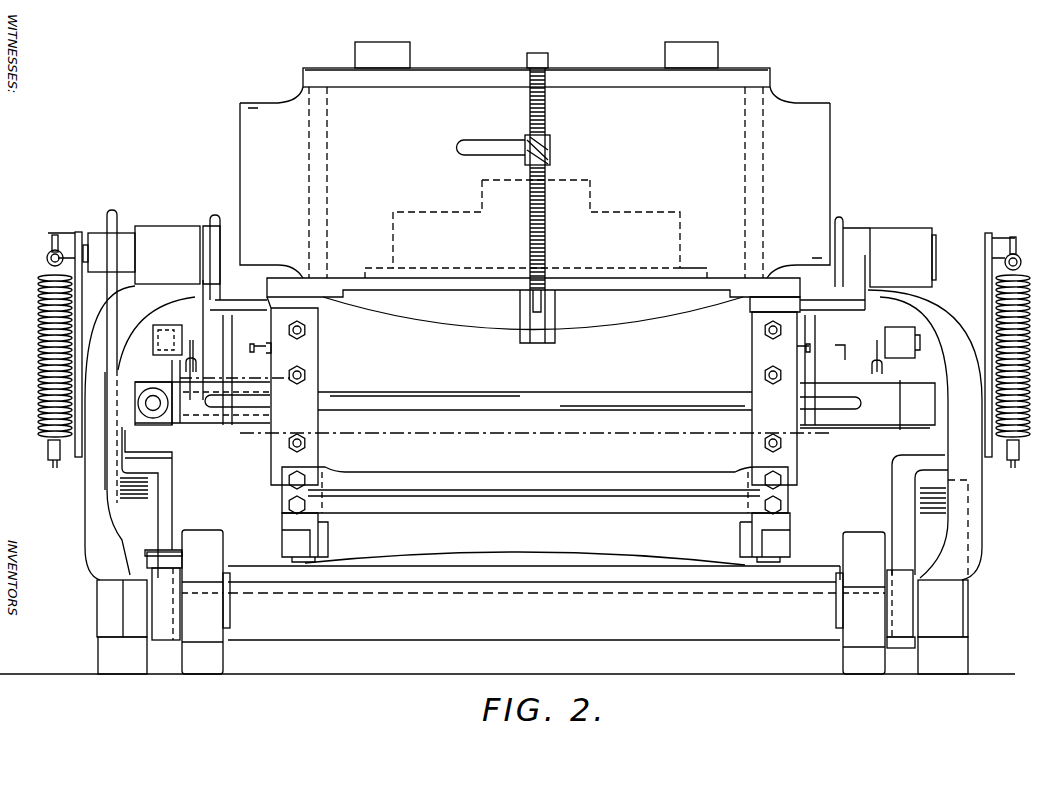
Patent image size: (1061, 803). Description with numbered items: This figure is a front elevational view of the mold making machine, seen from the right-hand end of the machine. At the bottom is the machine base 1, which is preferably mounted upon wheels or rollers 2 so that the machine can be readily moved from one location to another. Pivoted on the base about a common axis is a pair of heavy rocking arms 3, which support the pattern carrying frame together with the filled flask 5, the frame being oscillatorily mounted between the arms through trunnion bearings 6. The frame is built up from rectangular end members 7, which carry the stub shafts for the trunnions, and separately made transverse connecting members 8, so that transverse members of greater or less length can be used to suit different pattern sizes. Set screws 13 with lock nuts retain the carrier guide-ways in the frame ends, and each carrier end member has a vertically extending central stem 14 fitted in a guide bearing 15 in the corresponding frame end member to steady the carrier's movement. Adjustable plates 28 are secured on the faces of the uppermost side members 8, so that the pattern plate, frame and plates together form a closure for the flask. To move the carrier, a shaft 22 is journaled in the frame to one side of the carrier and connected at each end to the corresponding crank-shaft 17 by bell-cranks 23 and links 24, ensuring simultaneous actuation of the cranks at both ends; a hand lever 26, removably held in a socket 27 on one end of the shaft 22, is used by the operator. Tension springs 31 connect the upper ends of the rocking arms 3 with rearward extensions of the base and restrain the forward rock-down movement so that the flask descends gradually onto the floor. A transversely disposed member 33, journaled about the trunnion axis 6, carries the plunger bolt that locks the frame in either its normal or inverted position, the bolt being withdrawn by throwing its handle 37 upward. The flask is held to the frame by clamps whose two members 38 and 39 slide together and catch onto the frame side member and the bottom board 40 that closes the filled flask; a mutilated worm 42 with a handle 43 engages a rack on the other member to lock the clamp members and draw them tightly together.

The machine base 1 is at (428, 673).
The wheels or rollers 2 is at (100, 667).
The rocking arms 3 is at (95, 540).
The flask 5 is at (778, 128).
The trunnion bearings 6 is at (177, 243).
The end members of the frame 7 is at (251, 233).
The transverse connecting members 8 is at (258, 433).
The set screws 13 is at (268, 352).
The central stem 14 is at (525, 562).
The guide bearing 15 is at (326, 538).
The crank-shaft 17 is at (200, 415).
The operating shaft 22 is at (487, 405).
The bell-cranks 23 is at (255, 375).
The links 24 is at (170, 330).
The hand lever 26 is at (160, 402).
The socket 27 is at (157, 396).
The adjustable plates 28 is at (790, 290).
The tension springs 31 is at (1027, 350).
The transversely disposed member 33 is at (92, 245).
The handle 37 is at (105, 497).
The clamp member 38 is at (546, 122).
The clamp member 39 is at (542, 196).
The bottom board 40 is at (712, 86).
The mutilated worm 42 is at (550, 152).
The handle 43 is at (464, 152).